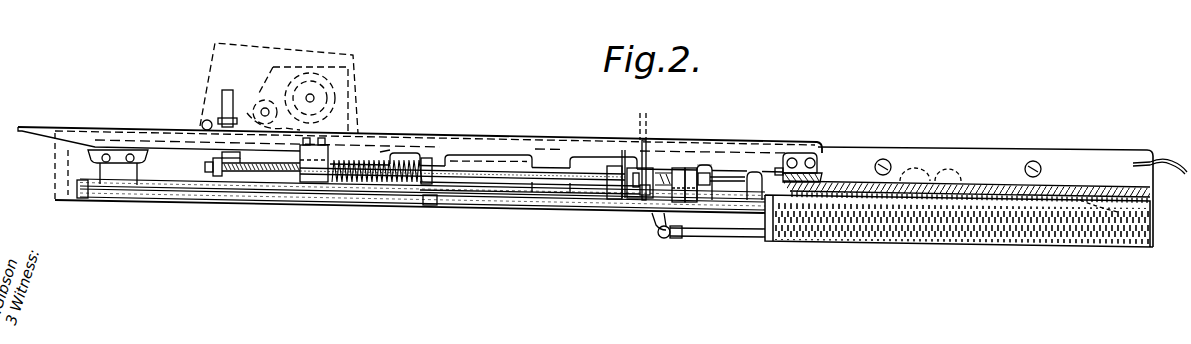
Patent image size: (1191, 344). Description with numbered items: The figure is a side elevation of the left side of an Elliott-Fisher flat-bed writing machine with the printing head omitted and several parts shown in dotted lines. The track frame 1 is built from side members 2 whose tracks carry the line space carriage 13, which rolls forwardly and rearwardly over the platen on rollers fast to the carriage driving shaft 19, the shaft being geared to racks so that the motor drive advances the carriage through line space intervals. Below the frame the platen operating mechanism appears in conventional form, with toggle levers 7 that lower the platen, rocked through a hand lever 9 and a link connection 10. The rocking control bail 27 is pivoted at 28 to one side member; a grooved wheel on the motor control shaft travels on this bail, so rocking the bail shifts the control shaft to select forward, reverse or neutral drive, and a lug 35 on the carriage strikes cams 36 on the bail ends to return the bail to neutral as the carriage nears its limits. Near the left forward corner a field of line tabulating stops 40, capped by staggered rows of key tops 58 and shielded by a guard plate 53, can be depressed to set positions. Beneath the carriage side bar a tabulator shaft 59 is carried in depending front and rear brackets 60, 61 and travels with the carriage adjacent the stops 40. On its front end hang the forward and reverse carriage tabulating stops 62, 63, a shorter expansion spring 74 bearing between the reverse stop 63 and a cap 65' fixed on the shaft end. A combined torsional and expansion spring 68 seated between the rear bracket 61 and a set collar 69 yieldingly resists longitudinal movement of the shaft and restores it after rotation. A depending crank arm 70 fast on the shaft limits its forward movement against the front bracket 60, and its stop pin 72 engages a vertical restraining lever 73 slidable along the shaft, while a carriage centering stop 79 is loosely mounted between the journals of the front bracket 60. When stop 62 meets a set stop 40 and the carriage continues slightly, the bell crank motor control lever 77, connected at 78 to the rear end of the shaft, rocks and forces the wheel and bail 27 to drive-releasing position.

The track frame 1 is at (922, 142).
The side members 2 is at (997, 153).
The toggle levers 7 is at (656, 238).
The hand lever 9 is at (1163, 160).
The link connection 10 is at (727, 238).
The line space carriage 13 is at (362, 84).
The carriage driving shaft 19 is at (313, 95).
The control bail 27 is at (470, 145).
The bail pivot 28 is at (82, 200).
The lug 35 is at (385, 150).
The cams 36 is at (115, 150).
The line tabulating stops 40 is at (1111, 212).
The guard plate 53 is at (865, 244).
The line tabulating key tops 58 is at (948, 178).
The tabulator shaft 59 is at (510, 182).
The front bracket 60 is at (660, 150).
The rear bracket 61 is at (313, 168).
The forward traveling carriage tabulating stop 62 is at (677, 168).
The reverse traveling carriage tabulating stop 63 is at (694, 168).
The cap 65' is at (724, 180).
The combined torsional and expansion spring 68 is at (342, 180).
The set collar 69 is at (425, 184).
The crank arm 70 is at (612, 183).
The stop pin 72 is at (625, 183).
The restraining lever 73 is at (634, 178).
The expansion spring 74 is at (706, 166).
The bell crank motor control lever 77 is at (222, 158).
The connection 78 is at (215, 176).
The carriage centering stop 79 is at (639, 190).